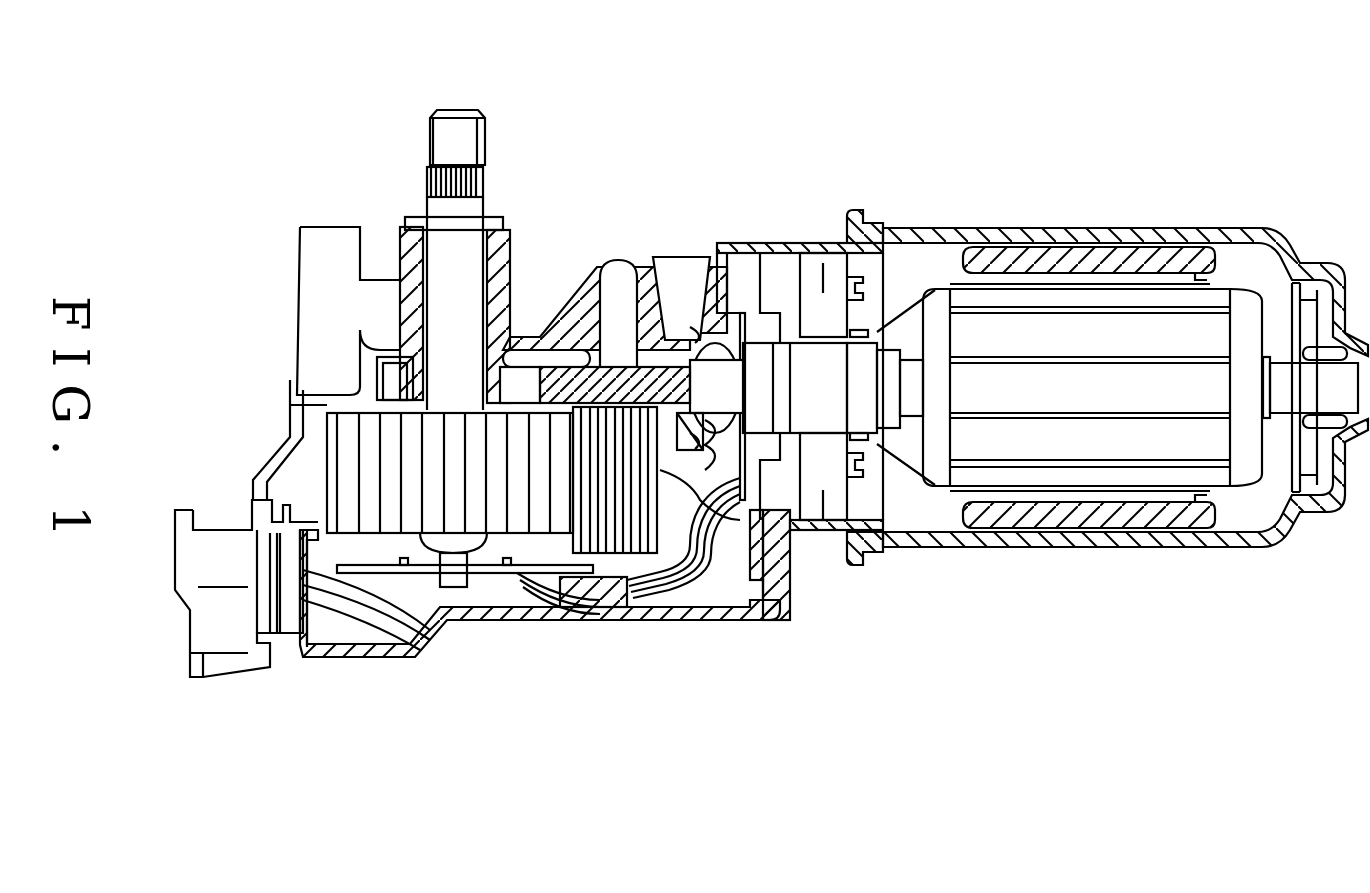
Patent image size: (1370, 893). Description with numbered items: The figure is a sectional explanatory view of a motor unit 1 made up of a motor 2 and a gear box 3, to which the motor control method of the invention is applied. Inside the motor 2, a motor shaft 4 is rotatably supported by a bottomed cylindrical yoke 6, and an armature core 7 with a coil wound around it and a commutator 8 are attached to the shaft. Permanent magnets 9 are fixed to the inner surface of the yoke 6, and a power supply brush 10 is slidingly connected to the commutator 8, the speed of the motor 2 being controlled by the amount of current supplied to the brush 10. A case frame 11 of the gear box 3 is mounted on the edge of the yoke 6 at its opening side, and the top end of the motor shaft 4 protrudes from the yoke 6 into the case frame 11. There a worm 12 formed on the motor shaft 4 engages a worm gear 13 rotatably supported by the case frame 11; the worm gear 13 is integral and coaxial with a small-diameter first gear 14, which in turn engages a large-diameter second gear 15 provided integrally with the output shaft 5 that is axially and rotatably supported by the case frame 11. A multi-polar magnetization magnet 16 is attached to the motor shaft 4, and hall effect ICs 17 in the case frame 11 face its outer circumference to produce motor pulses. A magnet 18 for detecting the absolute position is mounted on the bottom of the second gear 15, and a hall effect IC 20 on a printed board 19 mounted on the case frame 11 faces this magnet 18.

The motor unit 1 is at (908, 172).
The motor 2 is at (1127, 227).
The gear box 3 is at (595, 256).
The motor shaft 4 is at (1282, 403).
The output shaft 5 is at (453, 213).
The yoke 6 is at (993, 230).
The armature core 7 is at (1130, 440).
The commutator 8 is at (840, 407).
The permanent magnets 9 is at (1050, 512).
The power supply brush 10 is at (817, 320).
The case frame 11 is at (733, 243).
The worm 12 is at (520, 380).
The worm gear 13 is at (615, 365).
The first gear 14 is at (623, 537).
The second gear 15 is at (383, 460).
The multi-polar magnetization magnet 16 is at (760, 357).
The hall effect ICs 17 is at (770, 600).
The magnet for detecting the absolute position 18 is at (510, 580).
The printed board 19 is at (470, 580).
The hall effect IC 20 is at (562, 580).